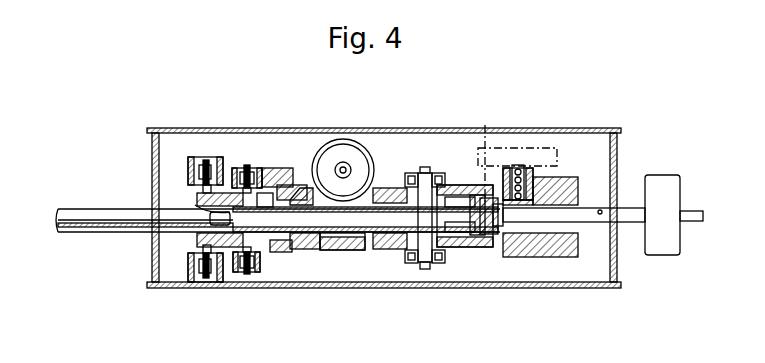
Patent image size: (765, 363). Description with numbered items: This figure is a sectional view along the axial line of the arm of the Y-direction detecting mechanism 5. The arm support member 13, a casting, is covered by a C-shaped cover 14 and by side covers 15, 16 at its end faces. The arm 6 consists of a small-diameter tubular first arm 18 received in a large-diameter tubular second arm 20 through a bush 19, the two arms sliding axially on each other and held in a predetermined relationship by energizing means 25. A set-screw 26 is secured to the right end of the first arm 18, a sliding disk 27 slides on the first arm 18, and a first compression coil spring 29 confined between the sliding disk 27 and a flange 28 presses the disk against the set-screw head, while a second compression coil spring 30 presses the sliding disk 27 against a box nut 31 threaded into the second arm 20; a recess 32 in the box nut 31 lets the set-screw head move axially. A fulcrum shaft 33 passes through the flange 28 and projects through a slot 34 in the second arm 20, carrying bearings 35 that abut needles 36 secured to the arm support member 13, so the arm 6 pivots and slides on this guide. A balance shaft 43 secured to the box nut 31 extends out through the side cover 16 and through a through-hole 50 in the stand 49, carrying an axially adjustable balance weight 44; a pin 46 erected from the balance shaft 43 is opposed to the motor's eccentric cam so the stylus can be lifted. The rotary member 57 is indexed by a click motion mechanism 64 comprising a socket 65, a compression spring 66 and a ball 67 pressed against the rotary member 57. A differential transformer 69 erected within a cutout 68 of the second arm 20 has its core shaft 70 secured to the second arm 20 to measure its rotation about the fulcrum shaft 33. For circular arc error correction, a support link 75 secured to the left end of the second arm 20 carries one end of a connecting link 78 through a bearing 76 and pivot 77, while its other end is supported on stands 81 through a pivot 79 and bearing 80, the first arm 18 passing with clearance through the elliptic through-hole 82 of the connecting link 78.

The Y-direction detecting mechanism 5 is at (612, 128).
The arm 6 is at (82, 229).
The arm support member 13 is at (427, 135).
The cover 14 is at (399, 128).
The side cover 15 is at (152, 255).
The side cover 16 is at (617, 142).
The first arm 18 is at (332, 250).
The bush 19 is at (303, 249).
The second arm 20 is at (360, 250).
The energizing means 25 is at (457, 312).
The set-screw 26 is at (500, 260).
The sliding disk 27 is at (480, 247).
The flange 28 is at (392, 250).
The first compression coil spring 29 is at (462, 256).
The second compression coil spring 30 is at (478, 255).
The box nut 31 is at (505, 247).
The recess 32 is at (485, 156).
The fulcrum shaft 33 is at (405, 190).
The slot 34 is at (448, 188).
The bearings 35 is at (412, 173).
The needles 36 is at (439, 173).
The balance shaft 43 is at (690, 211).
The balance weight 44 is at (664, 178).
The pin 46 is at (600, 209).
The stand 49 is at (560, 178).
The through-hole 50 is at (576, 240).
The rotary member 57 is at (506, 150).
The click motion mechanism 64 is at (535, 112).
The socket 65 is at (520, 183).
The compression spring 66 is at (519, 177).
The ball 67 is at (522, 170).
The cutout 68 is at (304, 188).
The differential transformer 69 is at (339, 144).
The core shaft 70 is at (348, 165).
The support link 75 is at (275, 168).
The bearing 76 is at (242, 168).
The pivot 77 is at (250, 168).
The connecting link 78 is at (200, 238).
The pivot 79 is at (203, 170).
The bearing 80 is at (214, 170).
The stands 81 is at (192, 160).
The through-hole 82 is at (208, 210).